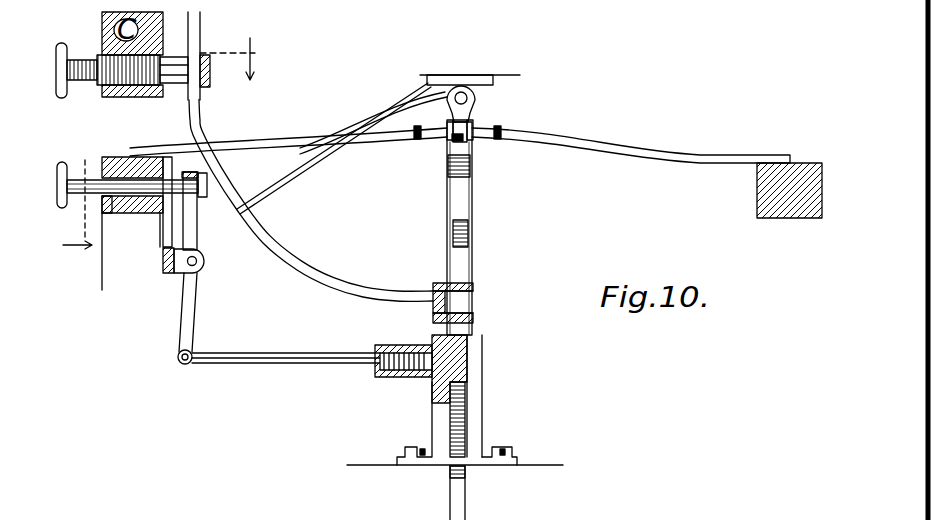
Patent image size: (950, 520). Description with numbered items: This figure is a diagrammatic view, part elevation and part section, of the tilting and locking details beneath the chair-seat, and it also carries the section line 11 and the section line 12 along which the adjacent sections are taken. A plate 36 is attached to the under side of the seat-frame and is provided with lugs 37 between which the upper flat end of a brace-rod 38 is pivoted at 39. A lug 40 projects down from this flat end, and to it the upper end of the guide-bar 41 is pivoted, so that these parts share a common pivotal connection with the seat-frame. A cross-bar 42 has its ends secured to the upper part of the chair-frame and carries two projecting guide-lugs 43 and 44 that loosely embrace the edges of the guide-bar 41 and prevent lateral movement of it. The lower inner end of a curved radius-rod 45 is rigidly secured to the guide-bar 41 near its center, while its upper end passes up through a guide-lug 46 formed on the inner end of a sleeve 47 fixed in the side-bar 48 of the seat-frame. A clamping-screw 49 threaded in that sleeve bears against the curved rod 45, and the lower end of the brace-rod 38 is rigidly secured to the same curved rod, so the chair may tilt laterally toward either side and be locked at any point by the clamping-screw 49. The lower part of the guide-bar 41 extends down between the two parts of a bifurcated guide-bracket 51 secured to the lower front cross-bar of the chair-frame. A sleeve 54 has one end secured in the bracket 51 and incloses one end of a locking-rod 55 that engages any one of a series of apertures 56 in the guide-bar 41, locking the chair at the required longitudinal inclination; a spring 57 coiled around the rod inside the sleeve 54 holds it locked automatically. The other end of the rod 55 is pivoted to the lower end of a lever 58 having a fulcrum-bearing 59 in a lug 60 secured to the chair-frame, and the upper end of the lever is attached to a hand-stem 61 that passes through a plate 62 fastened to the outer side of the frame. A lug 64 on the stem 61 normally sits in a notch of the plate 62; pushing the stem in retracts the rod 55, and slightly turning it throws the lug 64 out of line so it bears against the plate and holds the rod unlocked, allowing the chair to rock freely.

The section line 11 is at (250, 59).
The section line 12 is at (77, 224).
The plate 36 is at (448, 90).
The lugs 37 is at (475, 92).
The brace-rod 38 is at (348, 136).
The pivot 39 is at (420, 83).
The lug 40 is at (470, 157).
The guide-bar 41 is at (458, 232).
The cross-bar 42 is at (268, 148).
The guide-lug 43 is at (492, 132).
The guide-lug 44 is at (433, 133).
The curved radius-rod 45 is at (325, 290).
The guide-lug 46 is at (227, 78).
The sleeve 47 is at (175, 85).
The side-bar 48 is at (102, 33).
The clamping-screw 49 is at (95, 96).
The bifurcated guide-bracket 51 is at (437, 437).
The sleeve 54 is at (402, 345).
The locking-rod 55 is at (286, 342).
The apertures 56 is at (462, 362).
The spring 57 is at (377, 372).
The lever 58 is at (185, 220).
The fulcrum-bearing 59 is at (197, 262).
The lug 60 is at (165, 273).
The hand-stem 61 is at (57, 185).
The plate 62 is at (102, 162).
The lug 64 is at (102, 205).